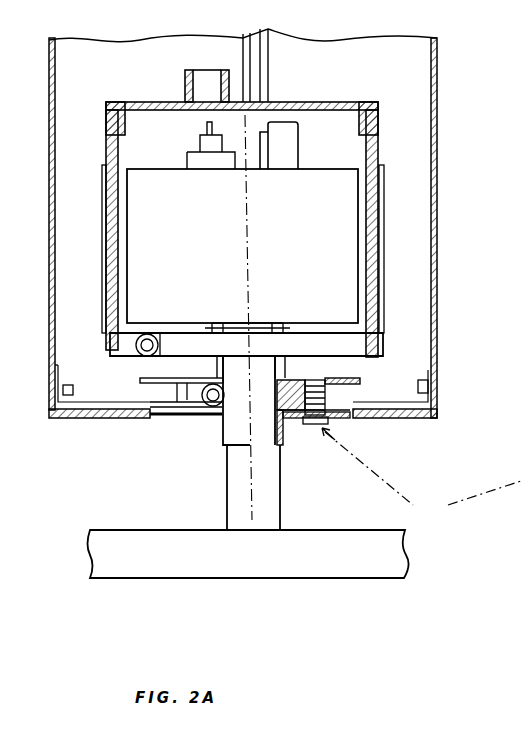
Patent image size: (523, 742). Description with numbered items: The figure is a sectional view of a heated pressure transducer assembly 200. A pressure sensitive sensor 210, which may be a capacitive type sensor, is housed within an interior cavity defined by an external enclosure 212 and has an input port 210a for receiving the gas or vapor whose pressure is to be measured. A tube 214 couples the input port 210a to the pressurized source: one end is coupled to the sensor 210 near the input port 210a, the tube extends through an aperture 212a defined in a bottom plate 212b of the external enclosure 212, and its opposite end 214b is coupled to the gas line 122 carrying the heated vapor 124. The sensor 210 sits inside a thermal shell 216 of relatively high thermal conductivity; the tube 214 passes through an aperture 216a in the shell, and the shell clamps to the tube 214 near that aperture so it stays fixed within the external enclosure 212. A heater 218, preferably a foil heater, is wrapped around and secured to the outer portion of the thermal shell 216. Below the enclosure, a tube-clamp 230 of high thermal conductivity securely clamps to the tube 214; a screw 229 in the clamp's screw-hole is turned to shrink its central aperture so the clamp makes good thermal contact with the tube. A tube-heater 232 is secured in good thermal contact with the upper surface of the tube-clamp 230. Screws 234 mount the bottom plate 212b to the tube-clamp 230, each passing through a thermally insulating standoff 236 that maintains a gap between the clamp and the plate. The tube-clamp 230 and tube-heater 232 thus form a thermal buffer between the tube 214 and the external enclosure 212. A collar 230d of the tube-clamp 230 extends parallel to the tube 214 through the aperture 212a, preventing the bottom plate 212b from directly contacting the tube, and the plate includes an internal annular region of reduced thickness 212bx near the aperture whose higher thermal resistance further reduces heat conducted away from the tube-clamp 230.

The heated pressure transducer assembly 200 is at (47, 262).
The external enclosure 212 is at (264, 267).
The aperture 212a is at (222, 425).
The bottom plate 212b is at (83, 412).
The internal annular region of reduced thickness 212bx is at (345, 418).
The thermal shell 216 is at (410, 137).
The aperture 216a is at (258, 344).
The heater 218 is at (104, 172).
The pressure sensitive sensor 210 is at (206, 220).
The input port 210a is at (256, 325).
The tube 214 is at (228, 476).
The opposite end 214b is at (228, 530).
The tube-heater 232 is at (150, 378).
The tube-clamp 230 is at (178, 398).
The screw 229 is at (202, 396).
The standoff 236 is at (332, 396).
The screw 234 is at (300, 430).
The collar 230d is at (283, 448).
The heated vapor 124 is at (275, 563).
The gas line 122 is at (332, 578).